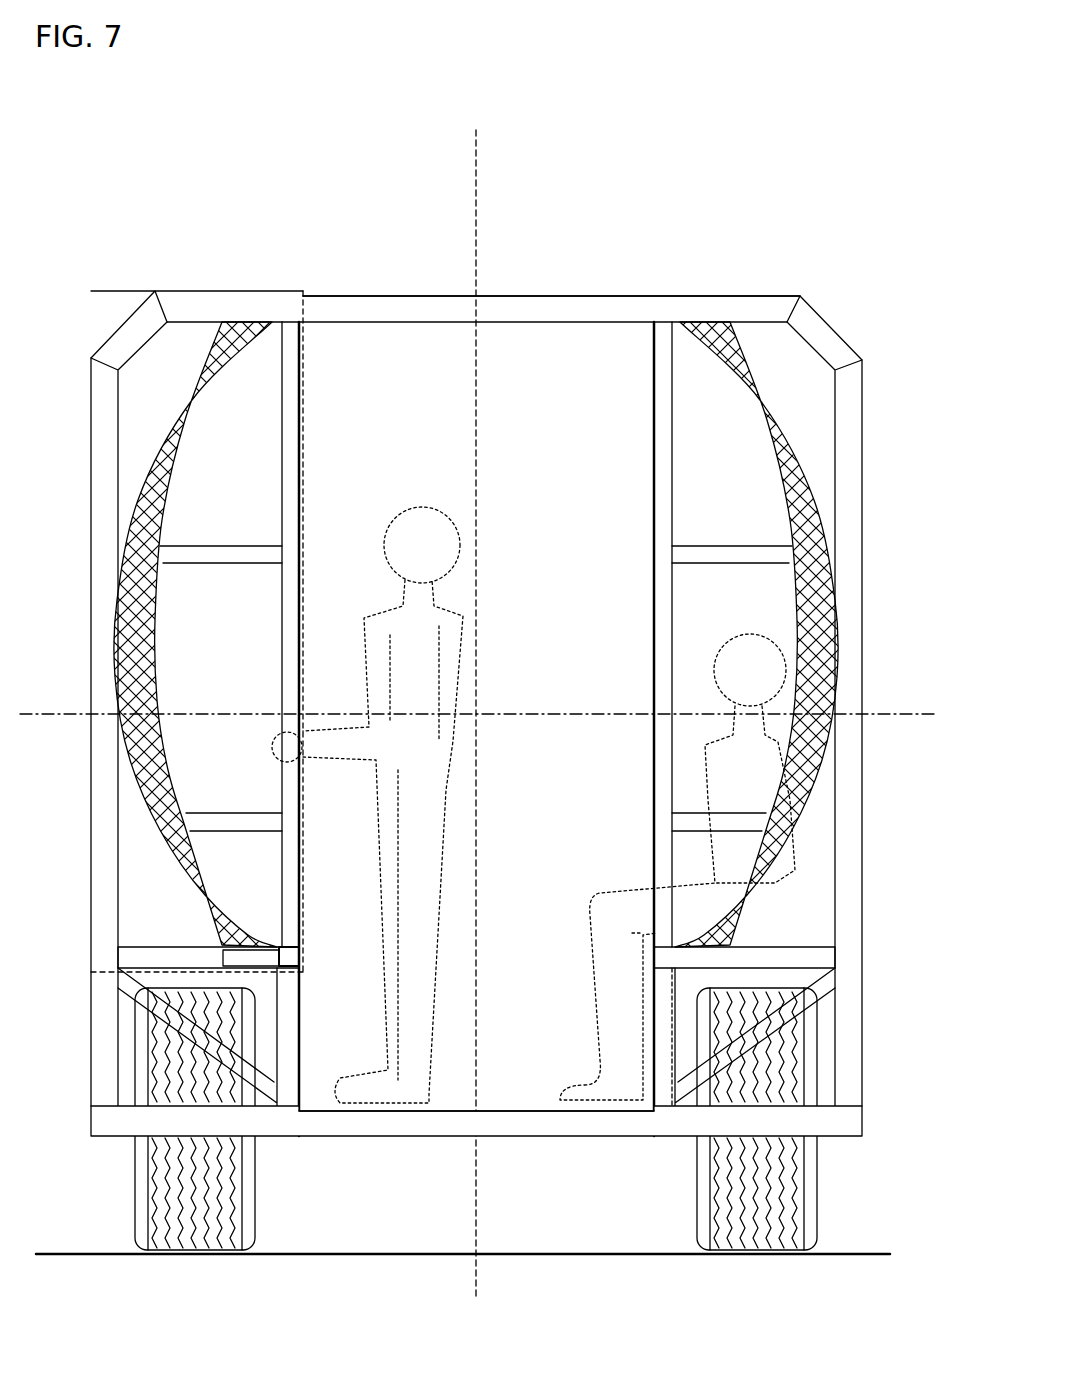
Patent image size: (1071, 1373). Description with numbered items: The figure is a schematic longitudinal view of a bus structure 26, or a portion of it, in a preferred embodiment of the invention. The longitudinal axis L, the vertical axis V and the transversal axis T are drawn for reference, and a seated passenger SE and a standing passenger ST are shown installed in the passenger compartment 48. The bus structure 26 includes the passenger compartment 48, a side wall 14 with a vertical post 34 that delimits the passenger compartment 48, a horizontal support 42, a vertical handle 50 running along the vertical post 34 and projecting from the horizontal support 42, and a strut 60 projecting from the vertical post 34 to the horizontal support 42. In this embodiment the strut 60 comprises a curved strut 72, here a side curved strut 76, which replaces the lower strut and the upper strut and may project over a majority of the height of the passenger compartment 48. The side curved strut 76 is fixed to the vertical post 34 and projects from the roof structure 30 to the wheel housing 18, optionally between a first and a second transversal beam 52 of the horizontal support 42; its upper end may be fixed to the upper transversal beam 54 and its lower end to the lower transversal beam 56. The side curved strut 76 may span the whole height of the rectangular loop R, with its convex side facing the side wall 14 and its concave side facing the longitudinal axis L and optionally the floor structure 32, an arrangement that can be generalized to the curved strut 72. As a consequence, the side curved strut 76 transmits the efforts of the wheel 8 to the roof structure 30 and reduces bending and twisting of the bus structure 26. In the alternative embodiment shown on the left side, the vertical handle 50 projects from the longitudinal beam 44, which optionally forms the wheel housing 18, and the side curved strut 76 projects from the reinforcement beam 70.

The wheel 8 is at (184, 1221).
The side wall 14 is at (103, 593).
The wheel housing 18 is at (129, 1063).
The bus structure 26 is at (309, 200).
The roof structure 30 is at (640, 182).
The floor structure 32 is at (493, 1086).
The vertical post 34 is at (103, 863).
The horizontal support 42 is at (517, 205).
The longitudinal beam 44 is at (290, 957).
The passenger compartment 48 is at (566, 583).
The vertical handle 50 is at (300, 456).
The transversal beam 52 is at (416, 312).
The upper transversal beam 54 is at (565, 312).
The lower transversal beam 56 is at (137, 953).
The strut 60 is at (175, 689).
The reinforcement beam 70 is at (285, 970).
The curved strut 72 is at (180, 792).
The side curved strut 76 is at (167, 520).
The rectangular loop R is at (227, 621).
The standing passenger ST is at (403, 564).
The seated passenger SE is at (733, 695).
The longitudinal axis L is at (480, 705).
The transversal axis T is at (561, 720).
The vertical axis V is at (478, 1208).